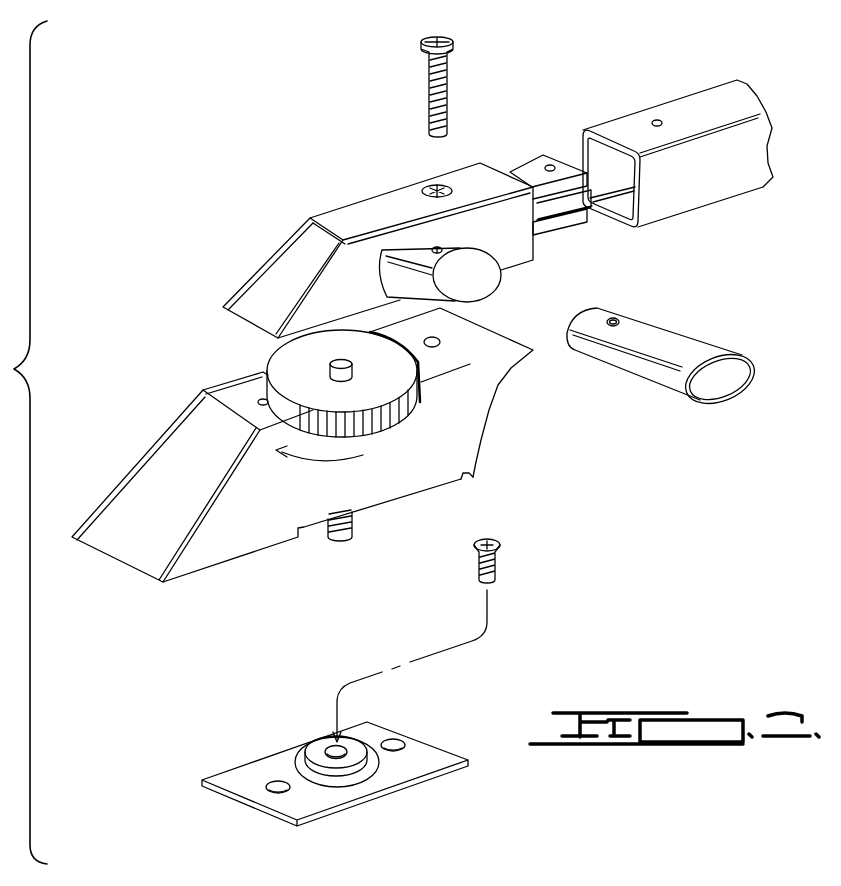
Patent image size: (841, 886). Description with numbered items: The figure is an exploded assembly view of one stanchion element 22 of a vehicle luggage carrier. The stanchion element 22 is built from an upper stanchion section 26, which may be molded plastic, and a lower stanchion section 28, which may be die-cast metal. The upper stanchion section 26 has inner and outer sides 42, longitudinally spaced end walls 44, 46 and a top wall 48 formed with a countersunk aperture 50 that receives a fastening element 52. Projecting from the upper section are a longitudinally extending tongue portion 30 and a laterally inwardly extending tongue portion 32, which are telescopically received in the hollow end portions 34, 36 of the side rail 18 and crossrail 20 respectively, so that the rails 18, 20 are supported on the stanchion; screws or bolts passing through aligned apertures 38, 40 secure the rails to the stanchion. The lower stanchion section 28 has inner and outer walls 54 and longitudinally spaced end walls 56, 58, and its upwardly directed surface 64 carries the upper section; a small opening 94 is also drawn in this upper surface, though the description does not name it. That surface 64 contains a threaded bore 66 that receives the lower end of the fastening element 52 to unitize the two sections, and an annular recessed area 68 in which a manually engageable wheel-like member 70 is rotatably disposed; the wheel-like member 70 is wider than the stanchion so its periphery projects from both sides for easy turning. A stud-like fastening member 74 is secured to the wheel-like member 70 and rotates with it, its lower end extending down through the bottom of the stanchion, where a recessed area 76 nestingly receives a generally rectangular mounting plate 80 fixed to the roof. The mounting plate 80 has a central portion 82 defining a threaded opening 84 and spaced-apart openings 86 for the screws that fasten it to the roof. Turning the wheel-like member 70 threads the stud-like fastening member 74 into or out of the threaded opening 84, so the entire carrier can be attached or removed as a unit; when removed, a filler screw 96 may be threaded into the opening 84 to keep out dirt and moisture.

The side rail 18 is at (710, 98).
The crossrail 20 is at (683, 343).
The stanchion element 22 is at (196, 303).
The upper stanchion section 26 is at (339, 203).
The lower stanchion section 28 is at (116, 483).
The longitudinally extending tongue portion 30 is at (525, 160).
The laterally inwardly extending tongue portion 32 is at (477, 273).
The hollow end portion 34 is at (632, 185).
The hollow end portion 36 is at (740, 360).
The aperture 38 is at (657, 121).
The aperture 40 is at (552, 164).
The inner and outer sides 42 is at (340, 257).
The end wall 44 is at (283, 267).
The end wall 46 is at (508, 177).
The top wall 48 is at (374, 206).
The countersunk aperture 50 is at (440, 186).
The fastening element 52 is at (428, 84).
The inner and outer walls 54 is at (237, 537).
The end wall 56 is at (137, 535).
The end wall 58 is at (490, 413).
The upwardly directed surface 64 is at (227, 388).
The threaded bore 66 is at (440, 340).
The annular recessed area 68 is at (400, 360).
The wheel-like member 70 is at (335, 440).
The stud-like fastening member 74 is at (353, 532).
The recessed area 76 is at (433, 485).
The mounting plate 80 is at (426, 789).
The central portion 82 is at (357, 748).
The threaded opening 84 is at (337, 757).
The spaced-apart opening 86 is at (397, 740).
The hole 94 is at (260, 404).
The filler screw 96 is at (505, 567).